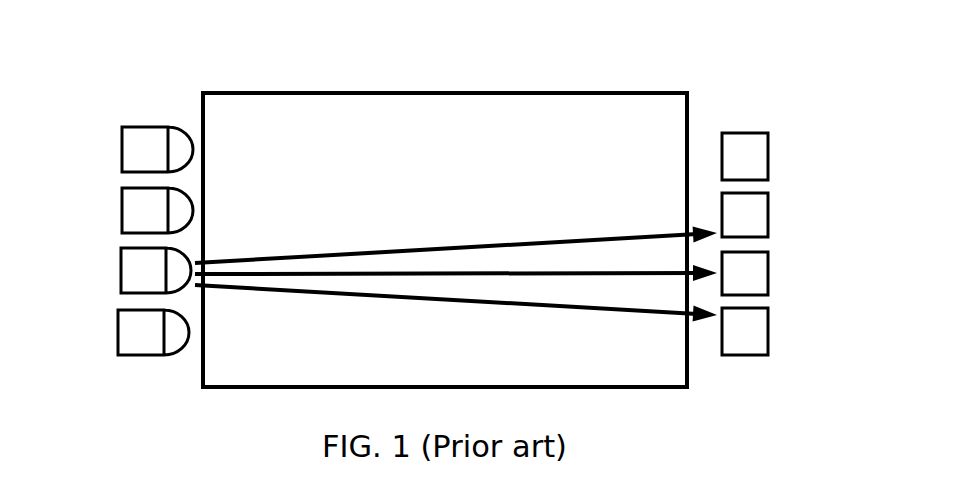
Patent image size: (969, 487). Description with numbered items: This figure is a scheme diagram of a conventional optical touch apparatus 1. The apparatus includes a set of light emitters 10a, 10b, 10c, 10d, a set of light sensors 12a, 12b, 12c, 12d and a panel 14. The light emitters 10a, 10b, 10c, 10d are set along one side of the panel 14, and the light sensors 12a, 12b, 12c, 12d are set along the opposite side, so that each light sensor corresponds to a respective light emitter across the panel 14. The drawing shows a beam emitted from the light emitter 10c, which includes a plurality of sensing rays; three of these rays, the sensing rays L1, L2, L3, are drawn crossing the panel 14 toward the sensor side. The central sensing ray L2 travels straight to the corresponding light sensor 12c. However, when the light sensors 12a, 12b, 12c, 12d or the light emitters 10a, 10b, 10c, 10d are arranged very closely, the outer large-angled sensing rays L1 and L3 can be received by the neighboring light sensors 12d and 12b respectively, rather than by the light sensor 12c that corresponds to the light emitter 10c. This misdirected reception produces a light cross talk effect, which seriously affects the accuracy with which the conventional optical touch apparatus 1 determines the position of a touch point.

The optical touch apparatus 1 is at (576, 56).
The panel 14 is at (249, 97).
The light emitter 10a is at (122, 158).
The light emitter 10b is at (122, 216).
The light emitter 10c is at (121, 274).
The light emitter 10d is at (118, 331).
The light sensor 12a is at (762, 160).
The light sensor 12b is at (763, 218).
The light sensor 12c is at (763, 280).
The light sensor 12d is at (763, 337).
The sensing ray L1 is at (456, 309).
The sensing ray L2 is at (456, 265).
The sensing ray L3 is at (456, 241).